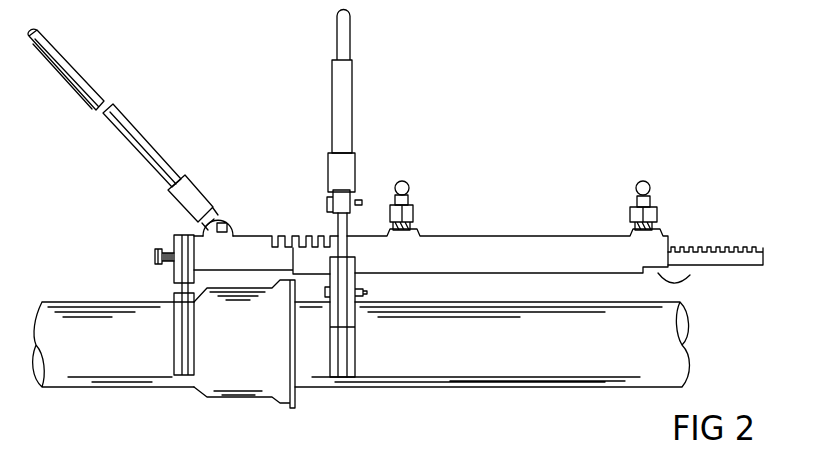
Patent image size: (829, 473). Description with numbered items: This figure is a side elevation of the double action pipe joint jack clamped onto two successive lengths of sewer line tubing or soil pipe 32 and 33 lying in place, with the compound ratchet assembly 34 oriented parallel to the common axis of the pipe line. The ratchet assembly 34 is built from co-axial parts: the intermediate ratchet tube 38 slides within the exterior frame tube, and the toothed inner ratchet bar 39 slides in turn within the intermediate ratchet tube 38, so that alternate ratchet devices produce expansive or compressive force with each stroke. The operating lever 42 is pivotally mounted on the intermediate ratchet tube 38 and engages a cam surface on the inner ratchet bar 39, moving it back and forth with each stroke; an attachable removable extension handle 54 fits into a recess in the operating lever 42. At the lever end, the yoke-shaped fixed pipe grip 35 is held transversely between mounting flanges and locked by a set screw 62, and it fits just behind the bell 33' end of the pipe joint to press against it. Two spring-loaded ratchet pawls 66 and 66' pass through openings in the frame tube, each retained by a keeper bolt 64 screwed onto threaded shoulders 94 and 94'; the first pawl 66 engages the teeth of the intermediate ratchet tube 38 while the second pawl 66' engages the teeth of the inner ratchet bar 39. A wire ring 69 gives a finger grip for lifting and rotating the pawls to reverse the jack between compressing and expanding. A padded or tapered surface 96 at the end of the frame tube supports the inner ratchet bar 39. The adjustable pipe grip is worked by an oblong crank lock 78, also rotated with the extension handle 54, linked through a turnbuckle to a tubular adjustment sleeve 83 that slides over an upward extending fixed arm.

The soil pipe 32 is at (518, 390).
The soil pipe 33 is at (111, 367).
The bell end 33' is at (244, 356).
The compound ratchet assembly 34 is at (310, 227).
The fixed pipe grip 35 is at (177, 287).
The intermediate ratchet tube 38 is at (247, 230).
The inner ratchet bar 39 is at (766, 257).
The operating lever 42 is at (203, 173).
The extension handle 54 is at (141, 138).
The set screw 62 is at (152, 254).
The keeper bolt 64 is at (390, 217).
The ratchet pawl 66 is at (424, 197).
The ratchet pawl 66' is at (670, 185).
The wire ring 69 is at (637, 185).
The crank lock 78 is at (357, 166).
The tubular adjustment sleeve 83 is at (354, 100).
The threaded shoulder 94 is at (422, 218).
The threaded shoulder 94' is at (673, 213).
The padded or tapered surface 96 is at (689, 278).